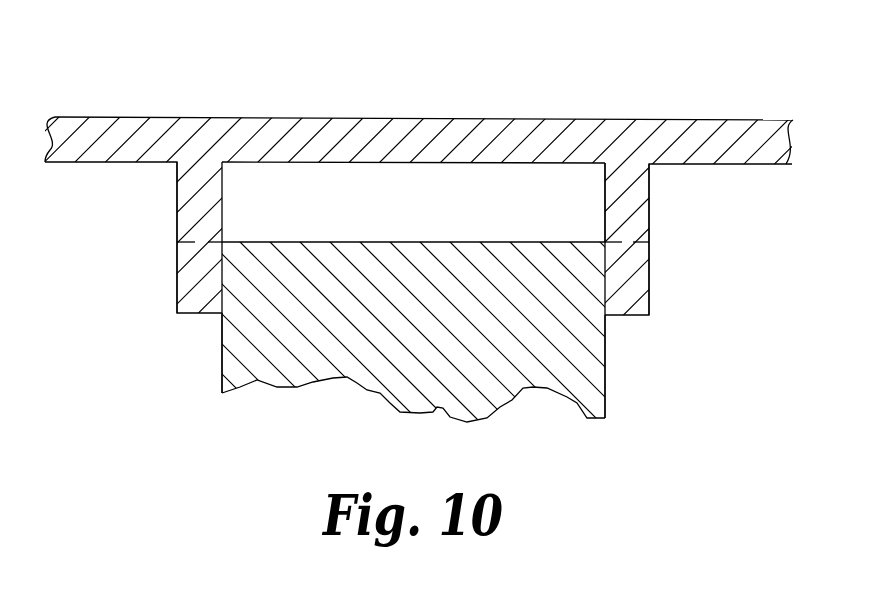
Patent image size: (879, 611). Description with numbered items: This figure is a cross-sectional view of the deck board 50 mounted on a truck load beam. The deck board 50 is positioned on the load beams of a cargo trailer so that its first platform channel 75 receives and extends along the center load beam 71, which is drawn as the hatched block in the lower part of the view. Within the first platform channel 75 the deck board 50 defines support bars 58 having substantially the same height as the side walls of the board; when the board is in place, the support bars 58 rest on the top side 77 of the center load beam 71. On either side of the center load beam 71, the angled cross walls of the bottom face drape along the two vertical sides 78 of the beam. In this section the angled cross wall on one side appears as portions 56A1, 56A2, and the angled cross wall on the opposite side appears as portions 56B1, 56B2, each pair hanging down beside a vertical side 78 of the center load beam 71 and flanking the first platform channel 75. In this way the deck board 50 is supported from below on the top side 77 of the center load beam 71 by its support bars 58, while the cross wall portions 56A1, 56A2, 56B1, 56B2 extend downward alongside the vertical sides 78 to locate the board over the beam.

The deck board 50 is at (162, 118).
The support bars 58 is at (535, 178).
The first platform channel 75 is at (607, 183).
The angled cross wall 56A1 is at (638, 282).
The angled cross wall 56A2 is at (635, 242).
The angled cross wall 56B1 is at (177, 280).
The angled cross wall 56B2 is at (186, 242).
The center load beam 71 is at (605, 348).
The top side 77 is at (380, 242).
The vertical sides 78 is at (220, 338).